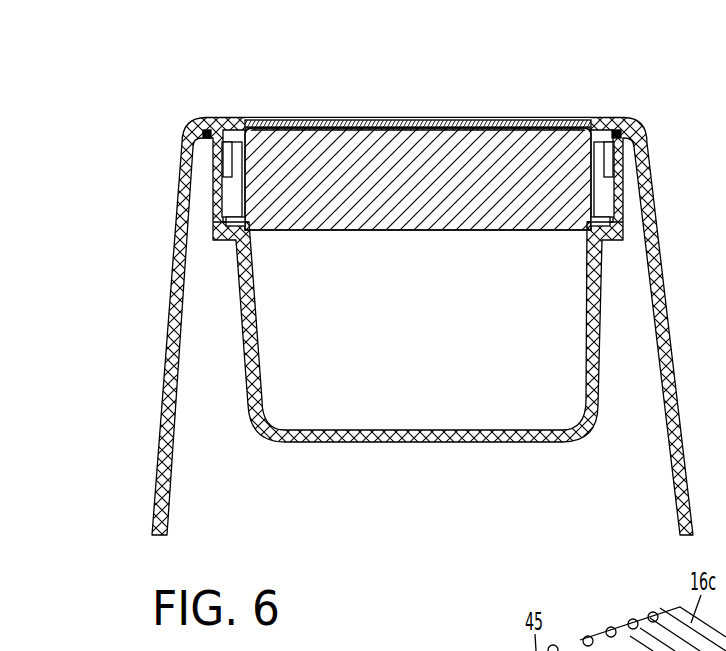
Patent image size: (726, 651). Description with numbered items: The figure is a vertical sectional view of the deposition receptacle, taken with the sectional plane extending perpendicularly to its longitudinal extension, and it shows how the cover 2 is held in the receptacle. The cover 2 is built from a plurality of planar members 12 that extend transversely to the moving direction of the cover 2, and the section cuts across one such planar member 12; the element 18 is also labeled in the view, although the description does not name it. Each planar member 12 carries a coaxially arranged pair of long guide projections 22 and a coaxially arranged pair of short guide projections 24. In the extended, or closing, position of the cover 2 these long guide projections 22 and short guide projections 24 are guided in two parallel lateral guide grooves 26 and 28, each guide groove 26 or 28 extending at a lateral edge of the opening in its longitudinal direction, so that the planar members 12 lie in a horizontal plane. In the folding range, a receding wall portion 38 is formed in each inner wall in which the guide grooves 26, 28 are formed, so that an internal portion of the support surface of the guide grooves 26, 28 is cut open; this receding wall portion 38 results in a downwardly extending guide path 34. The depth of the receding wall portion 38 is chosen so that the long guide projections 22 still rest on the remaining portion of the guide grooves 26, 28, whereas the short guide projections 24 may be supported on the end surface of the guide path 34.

The cover 2 is at (377, 97).
The planar member 12 is at (468, 163).
The seal film 18 is at (428, 122).
The long guide projection 22 is at (242, 129).
The short guide projection 24 is at (258, 232).
The guide groove 26 is at (207, 133).
The guide groove 28 is at (648, 130).
The guide path 34 is at (230, 240).
The receding wall portion 38 is at (228, 198).